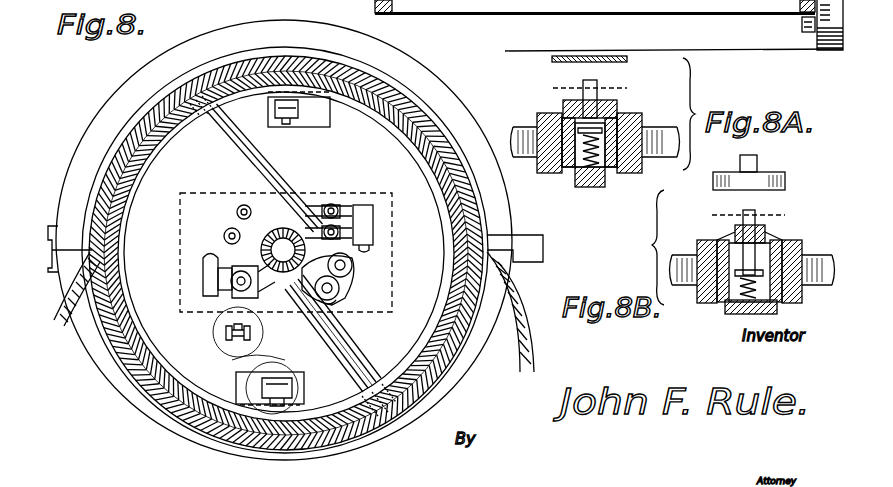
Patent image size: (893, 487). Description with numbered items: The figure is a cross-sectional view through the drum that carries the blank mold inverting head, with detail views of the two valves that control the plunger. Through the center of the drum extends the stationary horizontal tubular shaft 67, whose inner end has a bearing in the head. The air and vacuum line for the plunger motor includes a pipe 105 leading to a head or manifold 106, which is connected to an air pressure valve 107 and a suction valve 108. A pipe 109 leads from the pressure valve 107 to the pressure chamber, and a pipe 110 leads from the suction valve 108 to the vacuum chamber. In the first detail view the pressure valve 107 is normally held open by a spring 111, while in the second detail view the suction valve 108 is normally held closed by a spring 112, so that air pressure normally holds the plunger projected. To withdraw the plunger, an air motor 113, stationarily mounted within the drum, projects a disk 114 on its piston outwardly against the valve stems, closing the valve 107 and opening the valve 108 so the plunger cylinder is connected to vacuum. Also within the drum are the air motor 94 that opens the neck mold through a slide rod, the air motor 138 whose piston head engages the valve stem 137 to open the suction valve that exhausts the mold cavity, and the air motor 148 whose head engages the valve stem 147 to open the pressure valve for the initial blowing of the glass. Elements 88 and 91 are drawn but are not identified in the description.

In FIG. 8, the stationary horizontal tubular shaft 67 is at (273, 233).
In FIG. 8, the clamp bracket 88 is at (298, 394).
In FIG. 8, the link 91 is at (290, 363).
In FIG. 8, the air motor 94 is at (226, 335).
In FIG. 8, the pipe 105 is at (372, 250).
In FIG. 8, the manifold 106 is at (373, 226).
In FIG. 8, the air pressure valve 107 is at (338, 205).
In FIG. 8A, the air pressure valve 107 is at (618, 104).
In FIG. 8, the suction valve 108 is at (346, 262).
In FIG. 8B, the suction valve 108 is at (728, 302).
In FIG. 8, the pipe 109 is at (292, 157).
In FIG. 8A, the pipe 109 is at (530, 133).
In FIG. 8, the pipe 110 is at (248, 163).
In FIG. 8B, the pipe 110 is at (688, 256).
In FIG. 8A, the spring 111 is at (572, 172).
In FIG. 8B, the spring 112 is at (777, 306).
In FIG. 8, the air motor 113 is at (234, 293).
In FIG. 8A, the disk 114 is at (553, 60).
In FIG. 8B, the disk 114 is at (778, 190).
In FIG. 8, the valve stem 137 is at (239, 210).
In FIG. 8, the air motor 138 is at (330, 300).
In FIG. 8, the valve stem 147 is at (225, 235).
In FIG. 8, the air motor 148 is at (336, 286).